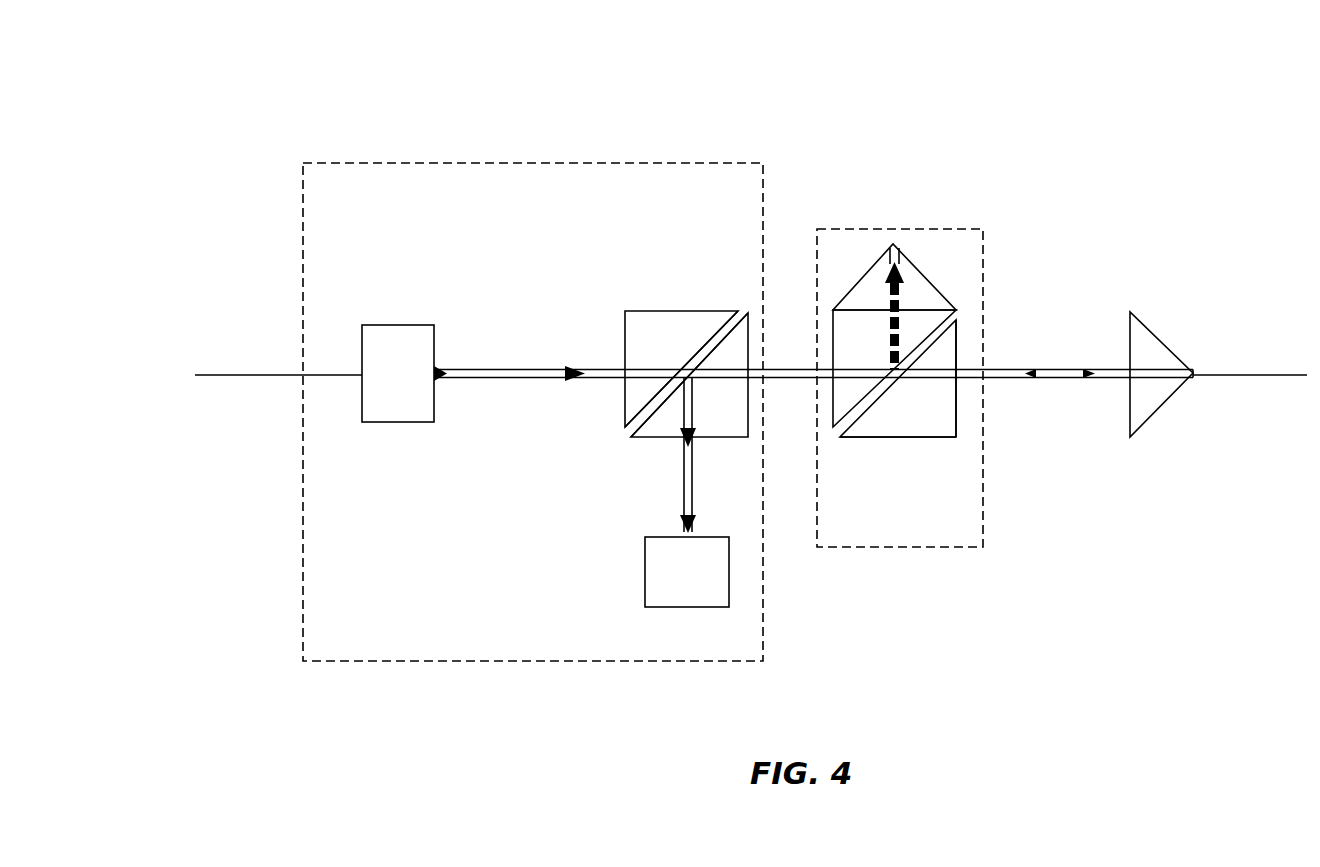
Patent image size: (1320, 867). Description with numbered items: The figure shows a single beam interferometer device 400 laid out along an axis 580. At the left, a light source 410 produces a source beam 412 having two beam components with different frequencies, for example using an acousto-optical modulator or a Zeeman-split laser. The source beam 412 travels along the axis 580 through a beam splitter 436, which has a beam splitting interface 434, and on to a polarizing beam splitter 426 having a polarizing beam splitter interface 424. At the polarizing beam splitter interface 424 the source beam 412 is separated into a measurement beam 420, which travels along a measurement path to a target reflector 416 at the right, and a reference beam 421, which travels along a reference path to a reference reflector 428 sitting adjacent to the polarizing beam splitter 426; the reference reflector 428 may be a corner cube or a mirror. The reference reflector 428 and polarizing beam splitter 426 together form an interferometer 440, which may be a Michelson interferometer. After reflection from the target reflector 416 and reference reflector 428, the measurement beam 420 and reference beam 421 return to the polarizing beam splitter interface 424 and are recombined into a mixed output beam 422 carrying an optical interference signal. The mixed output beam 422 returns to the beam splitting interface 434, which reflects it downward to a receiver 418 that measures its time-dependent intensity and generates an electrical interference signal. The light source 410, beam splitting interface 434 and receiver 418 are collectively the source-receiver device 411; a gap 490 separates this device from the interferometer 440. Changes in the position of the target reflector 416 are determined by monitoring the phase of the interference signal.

The single beam interferometer device 400 is at (792, 110).
The light source 410 is at (387, 422).
The source-receiver device 411 is at (518, 662).
The source beam 412 is at (540, 368).
The target reflector 416 is at (1165, 342).
The receiver 418 is at (645, 563).
The measurement beam 420 is at (1060, 378).
The reference beam 421 is at (899, 293).
The mixed output beam 422 is at (683, 468).
The polarizing beam splitter interface 424 is at (960, 332).
The polarizing beam splitter 426 is at (957, 428).
The reference reflector 428 is at (915, 267).
The beam splitting interface 434 is at (745, 328).
The beam splitter 436 is at (670, 311).
The interferometer 440 is at (983, 527).
The beam path 490 is at (813, 408).
The axis 580 is at (240, 378).